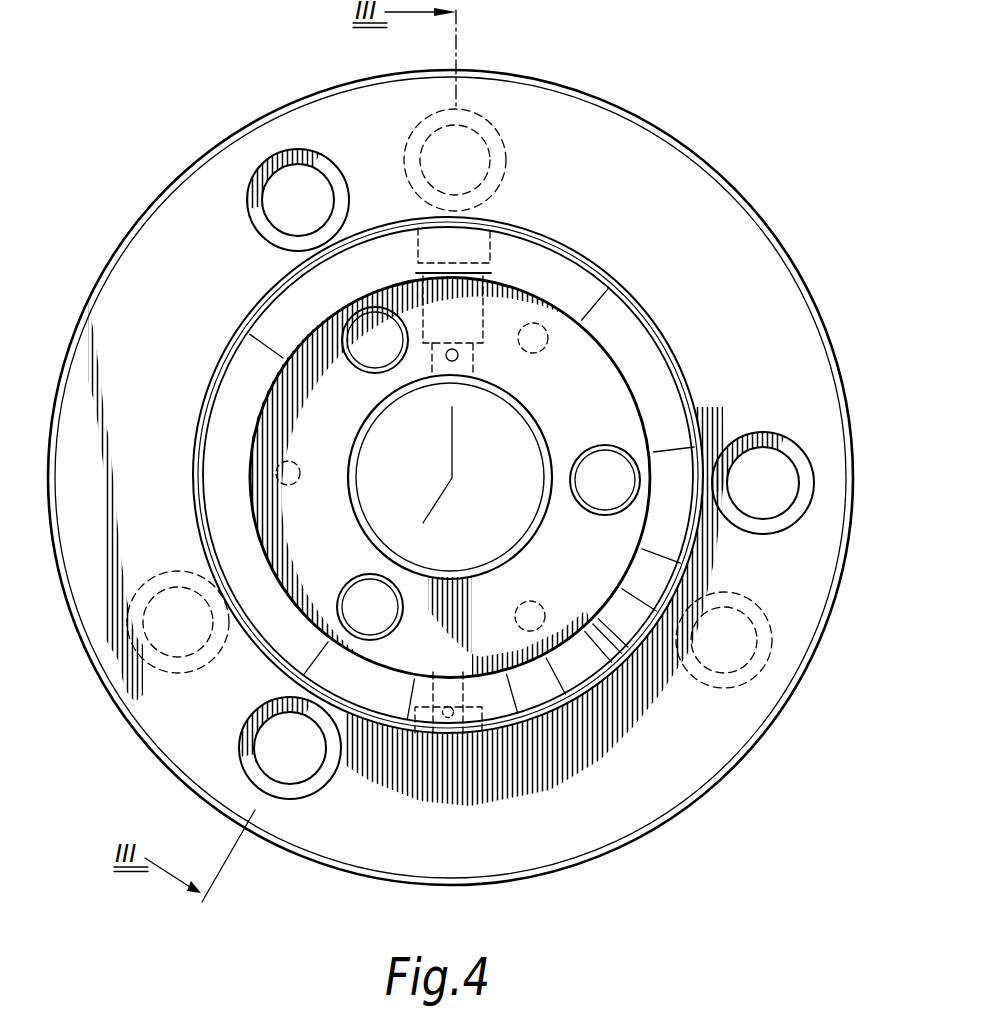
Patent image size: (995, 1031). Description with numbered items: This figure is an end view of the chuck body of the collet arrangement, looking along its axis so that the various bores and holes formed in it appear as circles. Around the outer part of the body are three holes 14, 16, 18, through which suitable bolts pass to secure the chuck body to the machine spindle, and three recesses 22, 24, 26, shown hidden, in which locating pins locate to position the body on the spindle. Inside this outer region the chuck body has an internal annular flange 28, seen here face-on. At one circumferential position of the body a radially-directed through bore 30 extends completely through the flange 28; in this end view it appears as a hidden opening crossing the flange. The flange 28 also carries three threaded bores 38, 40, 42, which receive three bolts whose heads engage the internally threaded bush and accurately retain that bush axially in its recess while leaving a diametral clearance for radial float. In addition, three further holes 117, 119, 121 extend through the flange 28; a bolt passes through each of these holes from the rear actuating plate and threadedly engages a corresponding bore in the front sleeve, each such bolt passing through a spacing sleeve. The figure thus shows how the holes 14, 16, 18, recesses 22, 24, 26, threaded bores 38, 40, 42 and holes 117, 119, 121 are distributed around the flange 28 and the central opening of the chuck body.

The hole 14 is at (268, 733).
The hole 16 is at (286, 178).
The hole 18 is at (792, 480).
The recess 22 is at (485, 154).
The recess 24 is at (147, 636).
The recess 26 is at (752, 642).
The internal annular flange 28 is at (512, 319).
The radially-directed through bore 30 is at (503, 294).
The threaded bore 38 is at (555, 345).
The threaded bore 40 is at (546, 600).
The threaded bore 42 is at (268, 463).
The hole 117 is at (357, 582).
The hole 119 is at (340, 332).
The hole 121 is at (605, 457).